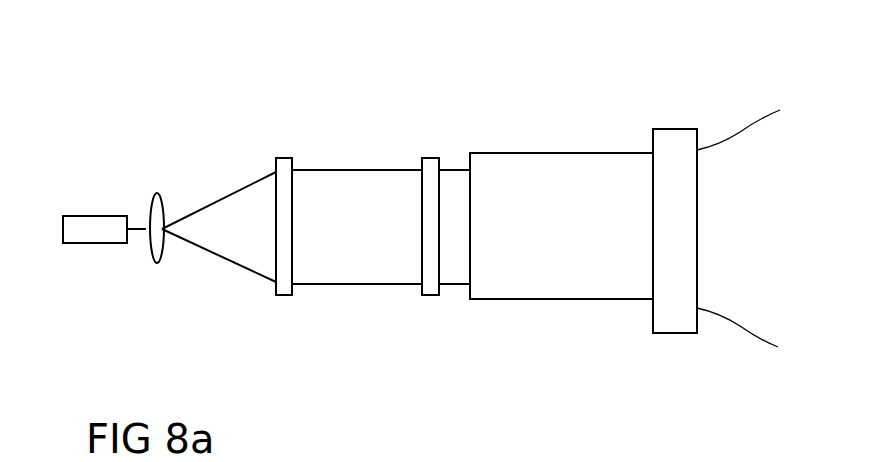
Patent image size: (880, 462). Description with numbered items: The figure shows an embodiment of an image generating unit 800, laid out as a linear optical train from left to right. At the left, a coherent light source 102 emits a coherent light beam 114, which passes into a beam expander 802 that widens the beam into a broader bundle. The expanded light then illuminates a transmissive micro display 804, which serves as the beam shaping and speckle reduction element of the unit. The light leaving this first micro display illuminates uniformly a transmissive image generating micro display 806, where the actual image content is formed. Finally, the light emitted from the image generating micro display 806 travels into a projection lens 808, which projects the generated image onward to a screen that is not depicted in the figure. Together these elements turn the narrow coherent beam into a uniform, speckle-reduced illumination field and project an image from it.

The image generating unit 800 is at (157, 102).
The coherent light source 102 is at (100, 215).
The coherent light beam 114 is at (138, 235).
The beam expander 802 is at (157, 263).
The transmissive micro display 804 is at (282, 153).
The transmissive image generating micro display 806 is at (433, 153).
The projection lens 808 is at (575, 300).